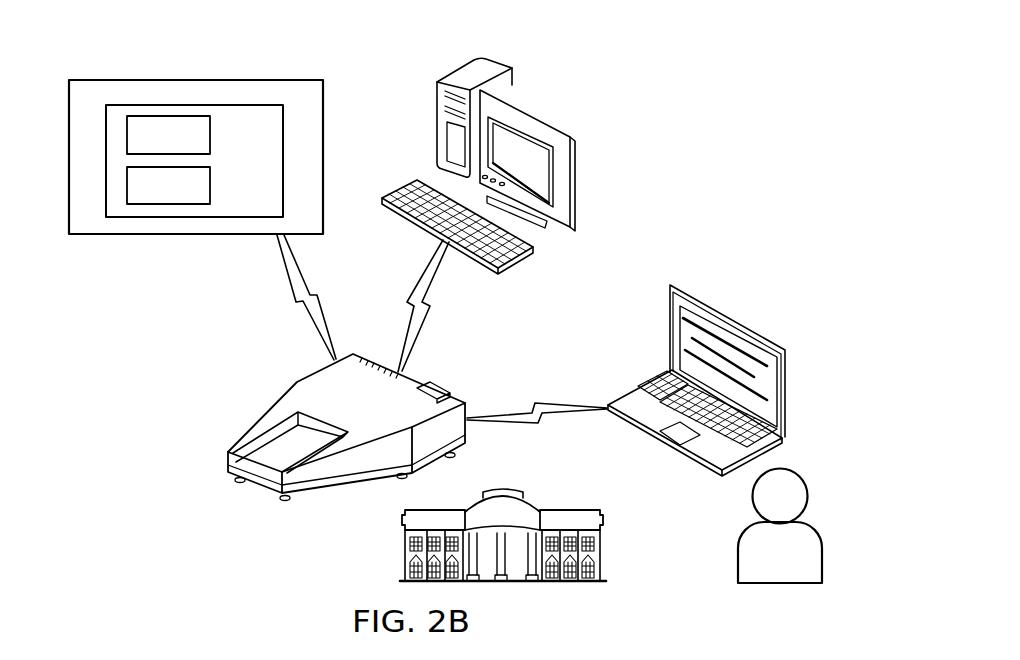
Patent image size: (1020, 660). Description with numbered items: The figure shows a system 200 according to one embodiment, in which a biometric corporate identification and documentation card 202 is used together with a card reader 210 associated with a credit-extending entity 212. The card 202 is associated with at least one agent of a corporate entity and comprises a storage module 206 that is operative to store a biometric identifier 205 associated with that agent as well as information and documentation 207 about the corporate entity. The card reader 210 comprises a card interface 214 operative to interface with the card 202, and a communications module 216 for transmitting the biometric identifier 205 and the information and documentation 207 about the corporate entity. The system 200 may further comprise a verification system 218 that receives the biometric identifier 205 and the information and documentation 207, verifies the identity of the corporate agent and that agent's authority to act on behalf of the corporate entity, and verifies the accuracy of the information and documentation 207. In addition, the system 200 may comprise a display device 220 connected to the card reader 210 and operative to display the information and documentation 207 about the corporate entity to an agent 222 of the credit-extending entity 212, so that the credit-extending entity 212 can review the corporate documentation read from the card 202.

The system 200 is at (660, 147).
The biometric corporate identification and documentation card 202 is at (69, 200).
The biometric identifier 205 is at (148, 148).
The storage module 206 is at (213, 217).
The information and documentation 207 is at (148, 198).
The card reader 210 is at (348, 357).
The credit-extending entity 212 is at (582, 509).
The card interface 214 is at (280, 457).
The communications module 216 is at (452, 396).
The verification system 218 is at (529, 98).
The display device 220 is at (743, 325).
The agent 222 is at (758, 566).